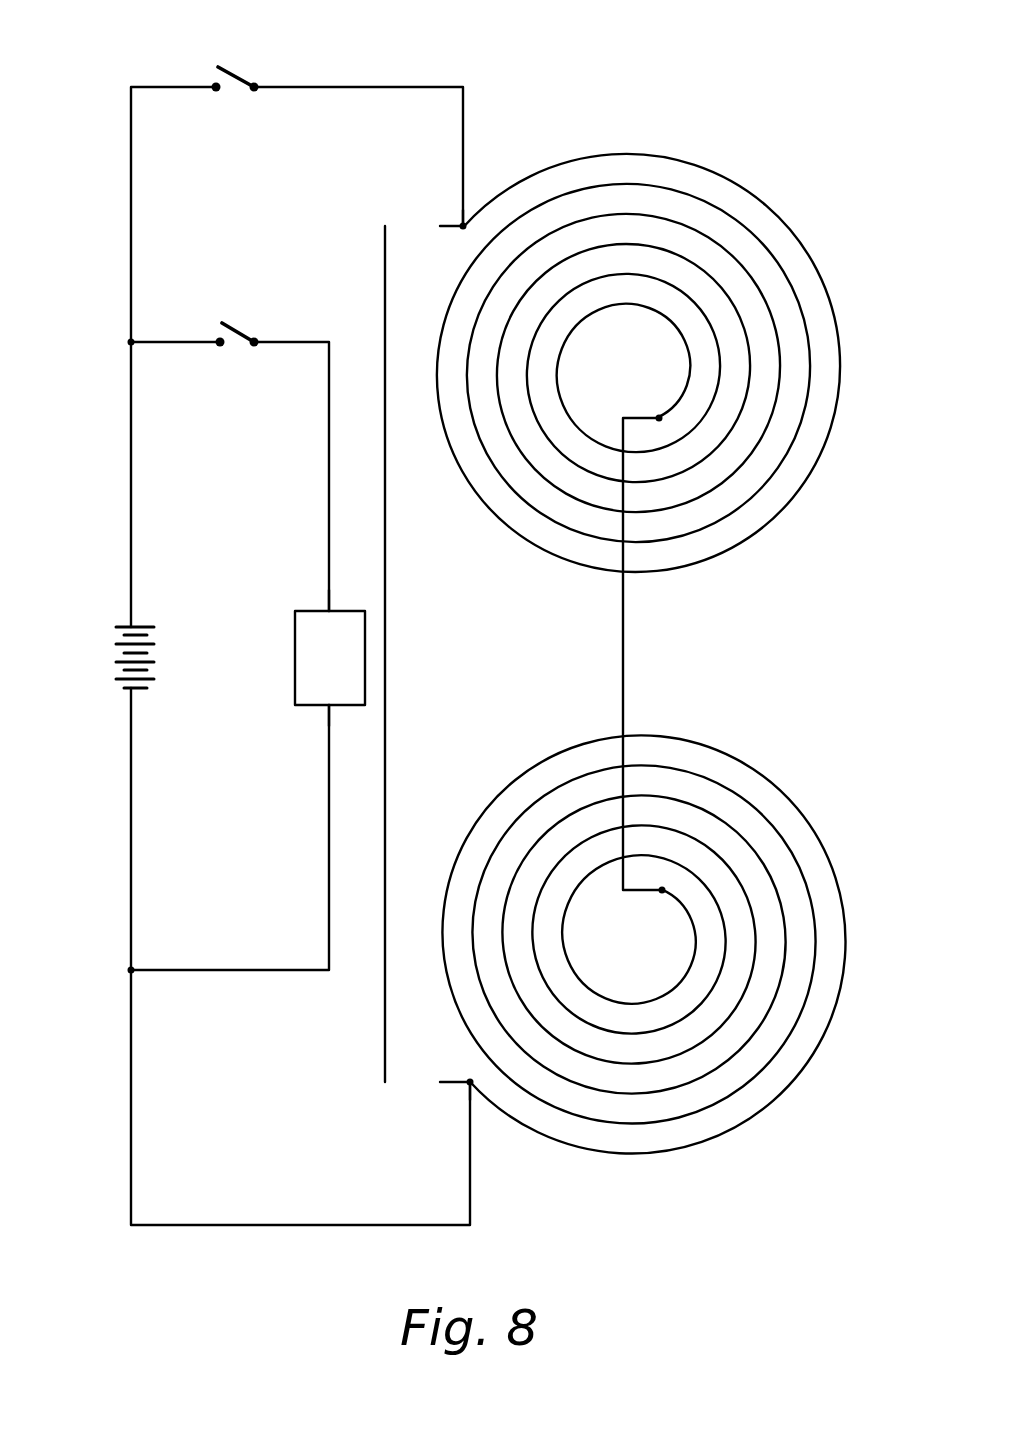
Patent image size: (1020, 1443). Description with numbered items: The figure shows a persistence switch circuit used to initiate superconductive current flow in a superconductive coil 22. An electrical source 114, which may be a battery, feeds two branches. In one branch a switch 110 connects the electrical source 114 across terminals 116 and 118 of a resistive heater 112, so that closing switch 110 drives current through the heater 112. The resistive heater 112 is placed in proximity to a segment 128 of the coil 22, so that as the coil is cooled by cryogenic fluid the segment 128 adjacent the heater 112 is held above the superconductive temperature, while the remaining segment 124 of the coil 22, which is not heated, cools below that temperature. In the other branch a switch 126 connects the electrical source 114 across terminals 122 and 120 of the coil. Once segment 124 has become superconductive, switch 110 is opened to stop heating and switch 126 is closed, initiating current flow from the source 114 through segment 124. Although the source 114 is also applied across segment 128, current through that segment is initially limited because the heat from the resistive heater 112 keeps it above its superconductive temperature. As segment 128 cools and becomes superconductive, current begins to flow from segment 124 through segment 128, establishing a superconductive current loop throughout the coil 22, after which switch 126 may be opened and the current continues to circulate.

The superconductive coil 22 is at (785, 208).
The switch 110 is at (237, 325).
The resistive heater 112 is at (295, 656).
The electrical source 114 is at (127, 627).
The terminal 116 is at (328, 611).
The terminal 118 is at (328, 705).
The terminal 120 is at (470, 1082).
The terminal 122 is at (463, 226).
The segment of coil 124 is at (622, 154).
The switch 126 is at (233, 73).
The segment of coil 128 is at (389, 657).